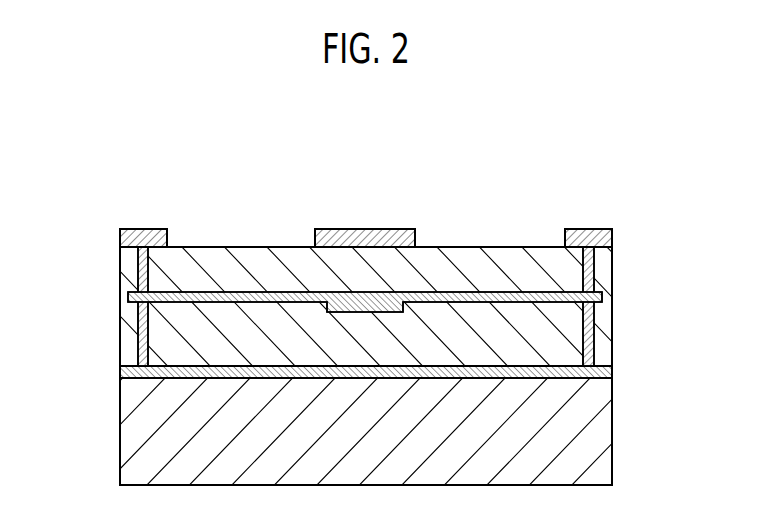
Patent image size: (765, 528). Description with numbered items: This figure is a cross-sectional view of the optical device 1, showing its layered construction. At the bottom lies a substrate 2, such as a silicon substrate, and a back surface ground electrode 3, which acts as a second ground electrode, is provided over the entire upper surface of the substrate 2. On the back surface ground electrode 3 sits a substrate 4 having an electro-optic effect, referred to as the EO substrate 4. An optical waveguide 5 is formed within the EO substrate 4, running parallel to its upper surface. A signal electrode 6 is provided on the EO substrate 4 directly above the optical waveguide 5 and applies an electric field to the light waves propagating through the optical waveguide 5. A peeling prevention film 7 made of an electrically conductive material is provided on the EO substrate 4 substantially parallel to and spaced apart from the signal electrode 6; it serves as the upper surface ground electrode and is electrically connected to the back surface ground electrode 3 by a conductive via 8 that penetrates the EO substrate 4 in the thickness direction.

The optical device 1 is at (638, 208).
The substrate 2 is at (600, 427).
The back surface ground electrode 3 is at (602, 369).
The substrate having an electro-optic effect 4 is at (600, 310).
The optical waveguide 5 is at (393, 297).
The signal electrode 6 is at (380, 229).
The peeling prevention film 7 is at (139, 229).
The via 8 is at (141, 265).